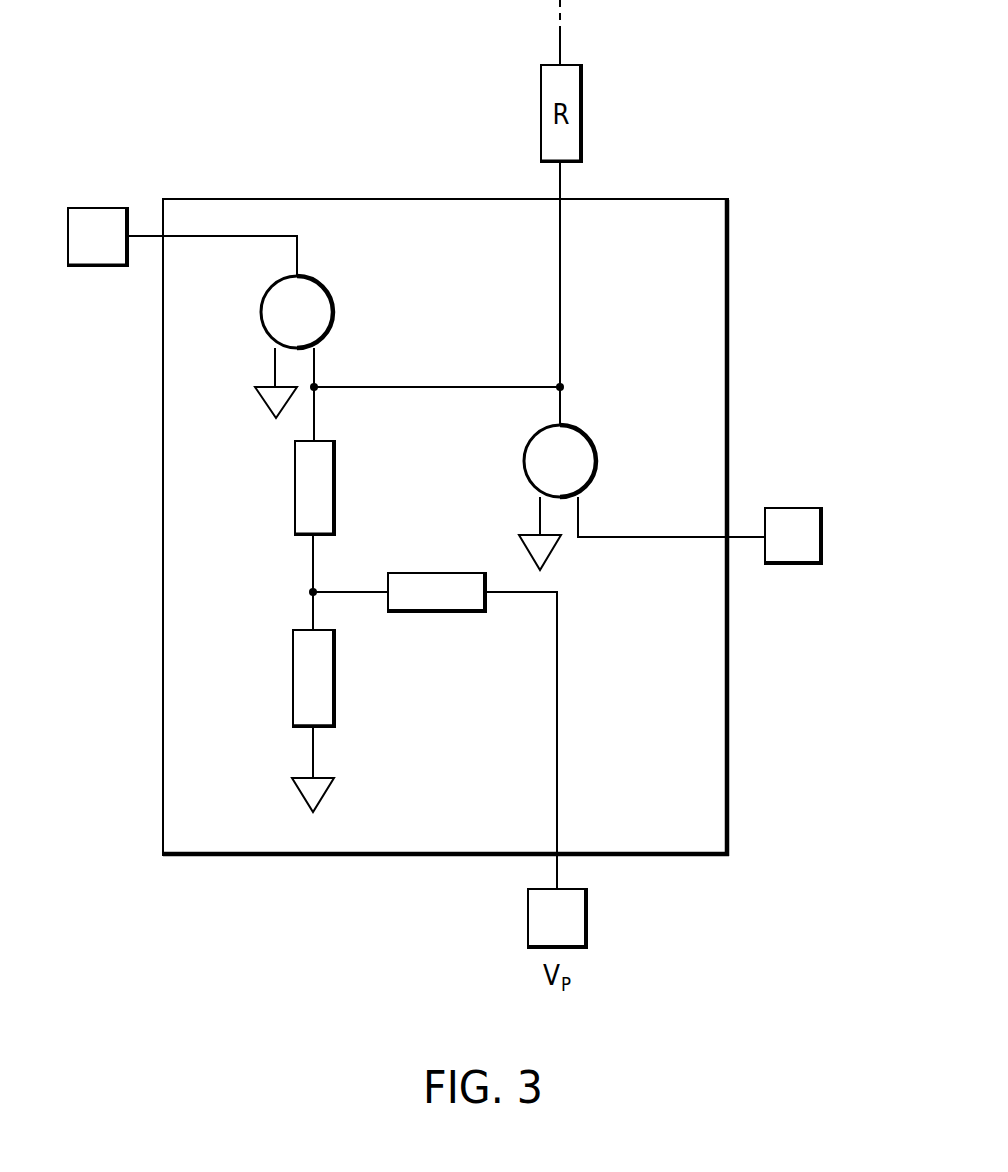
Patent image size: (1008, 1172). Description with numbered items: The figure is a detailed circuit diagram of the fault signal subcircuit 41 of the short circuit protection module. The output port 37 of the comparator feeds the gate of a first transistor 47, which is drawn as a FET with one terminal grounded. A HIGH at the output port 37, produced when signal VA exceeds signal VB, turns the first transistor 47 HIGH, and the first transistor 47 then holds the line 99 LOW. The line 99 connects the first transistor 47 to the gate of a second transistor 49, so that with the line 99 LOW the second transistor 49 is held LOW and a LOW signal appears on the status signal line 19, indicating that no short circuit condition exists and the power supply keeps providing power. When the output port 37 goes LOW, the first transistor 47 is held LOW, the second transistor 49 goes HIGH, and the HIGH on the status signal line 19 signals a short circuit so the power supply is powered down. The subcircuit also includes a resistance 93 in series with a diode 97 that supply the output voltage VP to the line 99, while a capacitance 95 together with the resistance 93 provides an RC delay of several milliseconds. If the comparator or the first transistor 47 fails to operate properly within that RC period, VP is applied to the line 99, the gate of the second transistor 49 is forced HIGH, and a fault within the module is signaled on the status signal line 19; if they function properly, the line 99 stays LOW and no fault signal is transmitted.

The status signal line 19 is at (742, 535).
The output port 37 is at (90, 205).
The fault signal subcircuit 41 is at (663, 197).
The first transistor 47 is at (334, 312).
The second transistor 49 is at (598, 461).
The resistance 93 is at (447, 572).
The capacitance 95 is at (336, 677).
The diode 97 is at (336, 487).
The line 99 is at (448, 386).